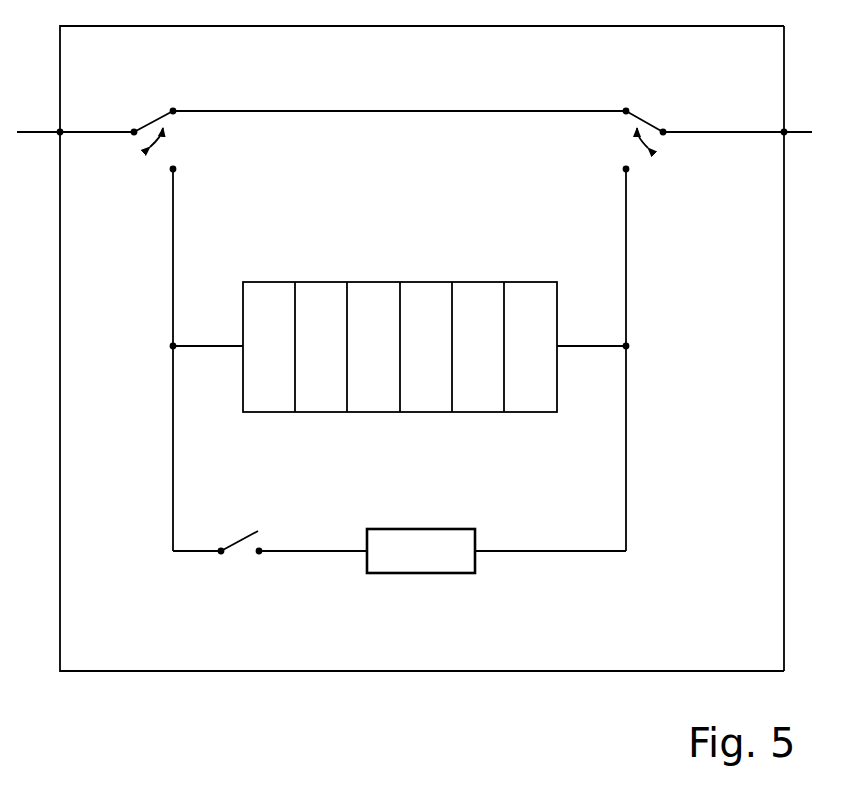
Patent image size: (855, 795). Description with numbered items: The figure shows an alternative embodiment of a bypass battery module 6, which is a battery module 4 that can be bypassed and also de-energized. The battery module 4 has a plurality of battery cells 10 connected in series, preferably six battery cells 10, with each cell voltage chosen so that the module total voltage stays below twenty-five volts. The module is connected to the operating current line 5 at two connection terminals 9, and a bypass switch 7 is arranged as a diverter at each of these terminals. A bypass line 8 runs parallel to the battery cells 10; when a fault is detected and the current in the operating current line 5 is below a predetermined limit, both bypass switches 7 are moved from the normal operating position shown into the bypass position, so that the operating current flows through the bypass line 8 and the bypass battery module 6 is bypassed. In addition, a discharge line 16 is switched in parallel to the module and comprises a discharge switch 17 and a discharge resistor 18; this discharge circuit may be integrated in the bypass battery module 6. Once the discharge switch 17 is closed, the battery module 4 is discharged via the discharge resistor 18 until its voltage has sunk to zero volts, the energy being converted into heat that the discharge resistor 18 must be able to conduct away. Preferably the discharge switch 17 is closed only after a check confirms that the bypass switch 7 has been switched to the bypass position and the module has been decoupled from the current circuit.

The battery module 4 is at (524, 658).
The operating current line 5 is at (68, 132).
The bypass battery module 6 is at (765, 347).
The bypass switch 7 is at (152, 121).
The bypass line 8 is at (575, 110).
The connection terminal 9 is at (58, 131).
The battery cell 10 is at (272, 315).
The discharge line 16 is at (541, 551).
The discharge switch 17 is at (246, 550).
The discharge resistor 18 is at (418, 555).